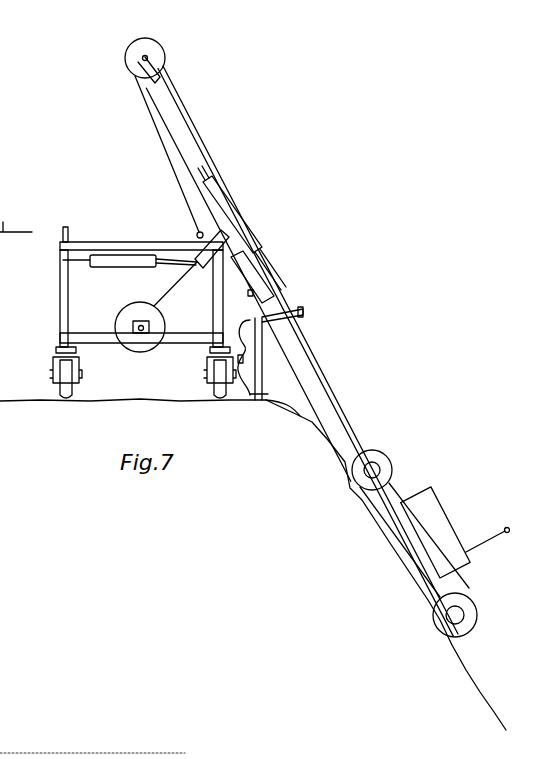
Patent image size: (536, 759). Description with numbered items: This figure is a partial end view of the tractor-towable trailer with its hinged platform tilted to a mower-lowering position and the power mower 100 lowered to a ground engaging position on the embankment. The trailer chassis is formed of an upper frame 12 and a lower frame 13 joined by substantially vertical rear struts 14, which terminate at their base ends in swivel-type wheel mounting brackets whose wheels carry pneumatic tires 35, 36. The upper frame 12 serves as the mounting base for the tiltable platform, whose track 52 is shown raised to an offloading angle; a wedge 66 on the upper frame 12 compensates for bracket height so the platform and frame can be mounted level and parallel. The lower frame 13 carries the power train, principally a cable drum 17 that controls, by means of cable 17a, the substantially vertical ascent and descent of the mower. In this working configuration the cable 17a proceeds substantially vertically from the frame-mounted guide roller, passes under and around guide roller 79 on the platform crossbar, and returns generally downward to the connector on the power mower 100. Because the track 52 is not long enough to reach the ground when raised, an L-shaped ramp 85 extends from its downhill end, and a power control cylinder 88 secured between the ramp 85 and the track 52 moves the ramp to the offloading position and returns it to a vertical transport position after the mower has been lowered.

The upper frame 12 is at (112, 243).
The lower frame 13 is at (90, 344).
The rear struts 14 is at (60, 301).
The cable drum 17 is at (137, 345).
The cable 17a is at (165, 157).
The pneumatic tire 35 is at (72, 400).
The pneumatic tire 36 is at (222, 400).
The track 52 is at (187, 128).
The wedge 66 is at (65, 228).
The guide roller 79 is at (146, 38).
The ramp 85 is at (307, 417).
The power control cylinder 88 is at (240, 226).
The power mower 100 is at (443, 512).